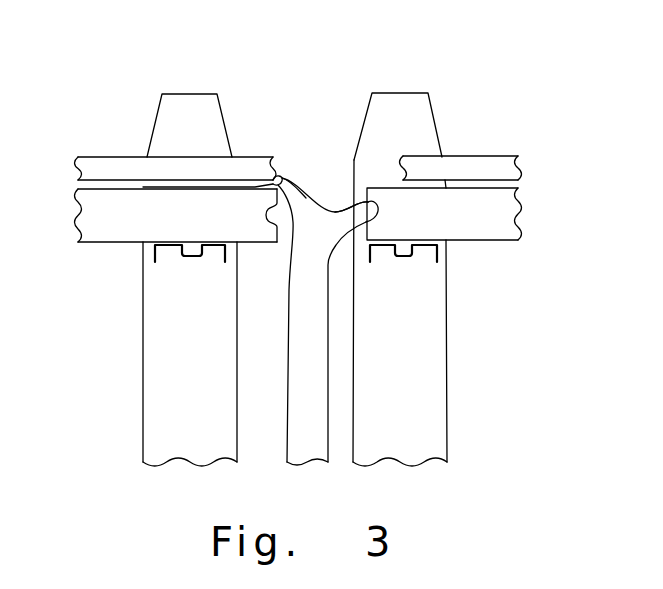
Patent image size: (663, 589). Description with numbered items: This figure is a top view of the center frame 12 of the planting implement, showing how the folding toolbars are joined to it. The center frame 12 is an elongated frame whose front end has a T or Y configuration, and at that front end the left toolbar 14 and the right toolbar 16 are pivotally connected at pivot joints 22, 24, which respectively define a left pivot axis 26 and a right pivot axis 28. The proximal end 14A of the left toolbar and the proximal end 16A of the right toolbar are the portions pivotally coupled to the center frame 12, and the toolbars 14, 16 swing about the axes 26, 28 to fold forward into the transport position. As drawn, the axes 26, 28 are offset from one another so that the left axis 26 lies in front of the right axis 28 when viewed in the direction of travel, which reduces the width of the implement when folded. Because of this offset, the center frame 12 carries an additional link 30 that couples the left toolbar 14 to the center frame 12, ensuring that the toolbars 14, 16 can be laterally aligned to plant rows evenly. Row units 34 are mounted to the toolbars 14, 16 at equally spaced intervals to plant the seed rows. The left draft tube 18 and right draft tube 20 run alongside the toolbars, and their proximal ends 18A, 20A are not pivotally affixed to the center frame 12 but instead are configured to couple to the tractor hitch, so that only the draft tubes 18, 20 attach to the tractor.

The center frame 12 is at (298, 412).
The left toolbar 14 is at (122, 222).
The proximal end of the left toolbar 14A is at (252, 244).
The right toolbar 16 is at (472, 223).
The proximal end of the right toolbar 16A is at (400, 264).
The left draft tube 18 is at (117, 163).
The proximal end of the left draft tube 18A is at (248, 150).
The right draft tube 20 is at (475, 163).
The proximal end of the right draft tube 20A is at (424, 150).
The pivot joint 22 is at (312, 277).
The pivot joint 24 is at (348, 203).
The left pivot axis 26 is at (285, 168).
The right pivot axis 28 is at (372, 222).
The additional link 30 is at (262, 182).
The row units 34 is at (432, 432).